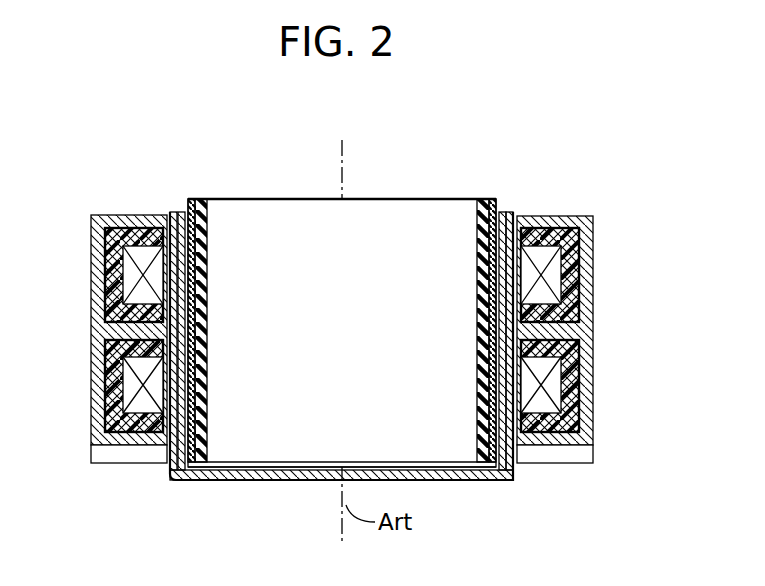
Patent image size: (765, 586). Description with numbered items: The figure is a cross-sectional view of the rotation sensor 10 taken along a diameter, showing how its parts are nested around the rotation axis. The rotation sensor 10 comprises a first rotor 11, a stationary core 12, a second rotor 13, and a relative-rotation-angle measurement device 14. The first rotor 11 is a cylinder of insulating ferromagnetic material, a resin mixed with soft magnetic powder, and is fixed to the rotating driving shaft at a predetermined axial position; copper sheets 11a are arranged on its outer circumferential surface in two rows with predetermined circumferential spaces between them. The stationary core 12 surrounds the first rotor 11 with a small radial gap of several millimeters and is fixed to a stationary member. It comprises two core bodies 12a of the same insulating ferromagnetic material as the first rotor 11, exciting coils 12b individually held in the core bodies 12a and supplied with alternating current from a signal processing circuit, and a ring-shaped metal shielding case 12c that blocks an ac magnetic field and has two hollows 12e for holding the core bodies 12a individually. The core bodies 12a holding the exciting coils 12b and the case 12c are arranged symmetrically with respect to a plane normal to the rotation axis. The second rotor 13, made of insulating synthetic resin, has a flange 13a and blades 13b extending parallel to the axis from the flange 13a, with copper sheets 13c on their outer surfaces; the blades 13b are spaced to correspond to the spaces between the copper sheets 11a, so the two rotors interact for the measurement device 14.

The rotation sensor 10 is at (270, 192).
The first rotor 11 is at (420, 197).
The copper sheets 11a is at (189, 199).
The stationary core 12 is at (576, 215).
The core bodies 12a is at (118, 292).
The exciting coils 12b is at (125, 404).
The shielding case 12c is at (586, 338).
The hollows 12e is at (110, 363).
The second rotor 13 is at (192, 483).
The flange 13a is at (493, 481).
The blades 13b is at (505, 213).
The copper sheets 13c is at (174, 212).
The relative-rotation-angle measurement device 14 is at (112, 450).